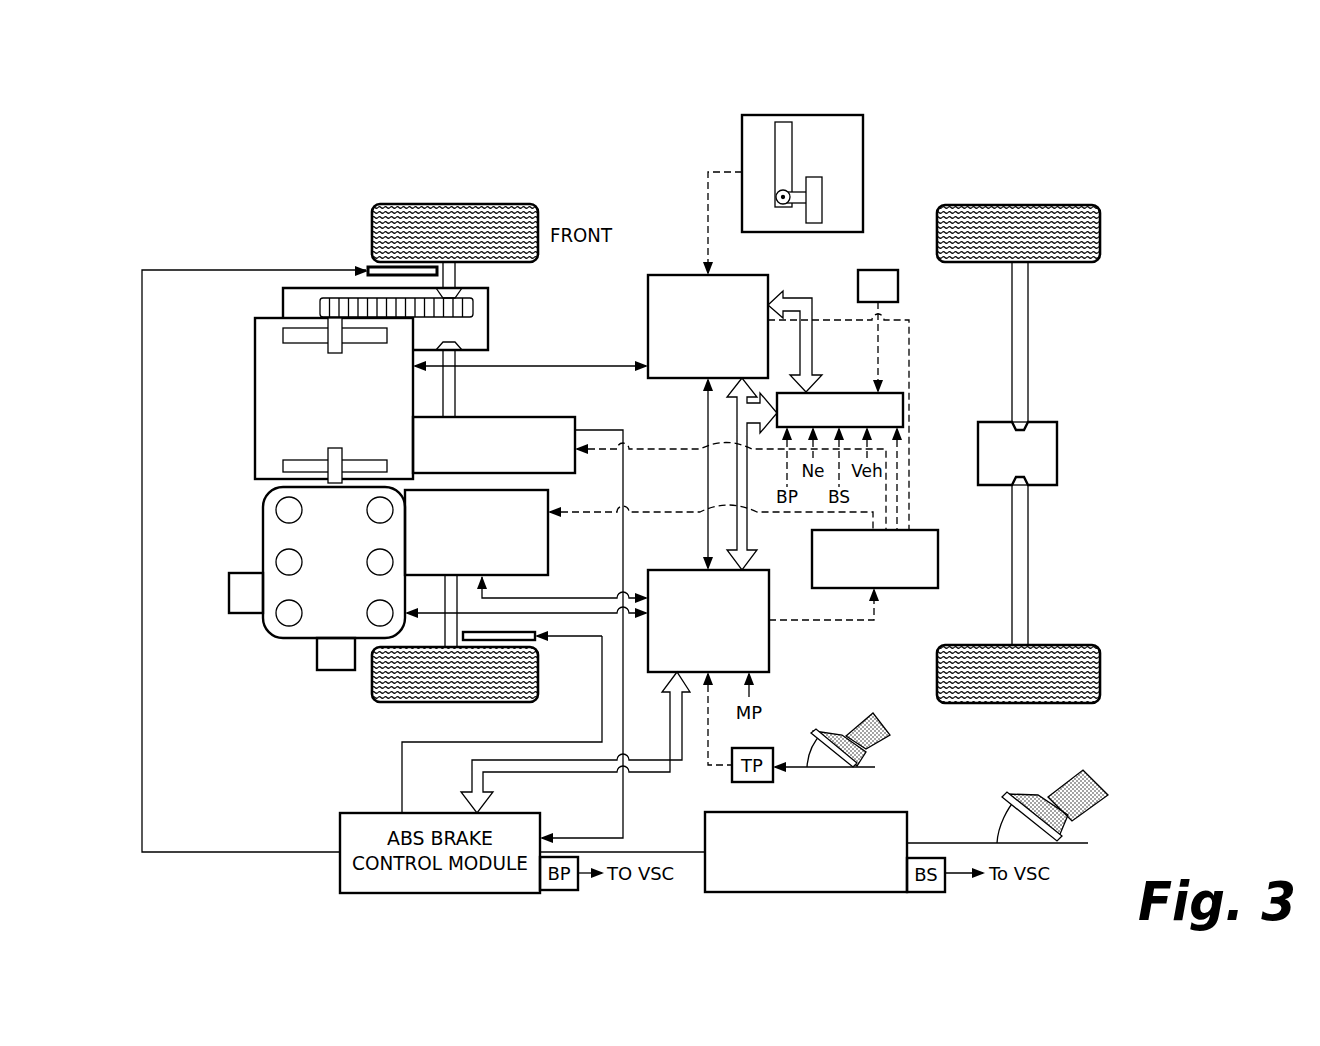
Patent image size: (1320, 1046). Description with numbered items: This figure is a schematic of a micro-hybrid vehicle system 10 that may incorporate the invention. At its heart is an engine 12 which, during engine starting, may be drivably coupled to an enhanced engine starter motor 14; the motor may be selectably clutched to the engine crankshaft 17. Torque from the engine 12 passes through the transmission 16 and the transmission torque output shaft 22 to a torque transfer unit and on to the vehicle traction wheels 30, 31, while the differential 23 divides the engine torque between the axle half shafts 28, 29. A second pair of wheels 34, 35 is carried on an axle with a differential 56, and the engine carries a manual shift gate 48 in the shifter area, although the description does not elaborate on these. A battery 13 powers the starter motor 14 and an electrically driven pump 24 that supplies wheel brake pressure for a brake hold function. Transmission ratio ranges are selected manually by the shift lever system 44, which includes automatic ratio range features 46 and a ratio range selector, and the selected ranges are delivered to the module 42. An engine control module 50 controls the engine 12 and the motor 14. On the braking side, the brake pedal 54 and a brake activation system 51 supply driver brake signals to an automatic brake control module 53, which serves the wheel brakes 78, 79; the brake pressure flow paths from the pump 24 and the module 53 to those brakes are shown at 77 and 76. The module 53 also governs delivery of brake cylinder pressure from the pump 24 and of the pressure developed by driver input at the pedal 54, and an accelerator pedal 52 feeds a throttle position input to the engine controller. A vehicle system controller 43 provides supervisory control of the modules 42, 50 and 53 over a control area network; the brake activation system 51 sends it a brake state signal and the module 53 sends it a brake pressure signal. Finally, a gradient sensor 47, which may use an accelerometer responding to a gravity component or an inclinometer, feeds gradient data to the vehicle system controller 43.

The micro-hybrid vehicle system 10 is at (502, 122).
The engine 12 is at (300, 641).
The battery 13 is at (922, 530).
The enhanced engine starter motor 14 is at (548, 533).
The transmission 16 is at (255, 398).
The engine crankshaft 17 is at (332, 466).
The transmission torque output shaft 22 is at (333, 335).
The differential 23 is at (488, 323).
The electrically driven pump 24 is at (538, 417).
The axle half shaft 28 is at (458, 272).
The axle half shaft 29 is at (447, 634).
The vehicle traction wheel 30 is at (458, 204).
The vehicle traction wheel 31 is at (450, 703).
The wheel 34 is at (1022, 205).
The wheel 35 is at (1062, 645).
The module 42 is at (770, 288).
The vehicle system controller 43 is at (903, 410).
The shift lever system 44 is at (863, 177).
The automatic ratio range features 46 is at (782, 122).
The gradient sensor 47 is at (880, 270).
The manual shift gate 48 is at (816, 177).
The engine control module 50 is at (769, 596).
The brake activation system 51 is at (907, 827).
The accelerator pedal 52 is at (840, 732).
The automatic brake control module 53 is at (540, 826).
The brake pedal 54 is at (1030, 795).
The differential 56 is at (1057, 455).
The brake pressure flow path 76 is at (330, 268).
The brake pressure flow path 77 is at (566, 640).
The wheel brake 78 is at (372, 267).
The wheel brake 79 is at (530, 641).